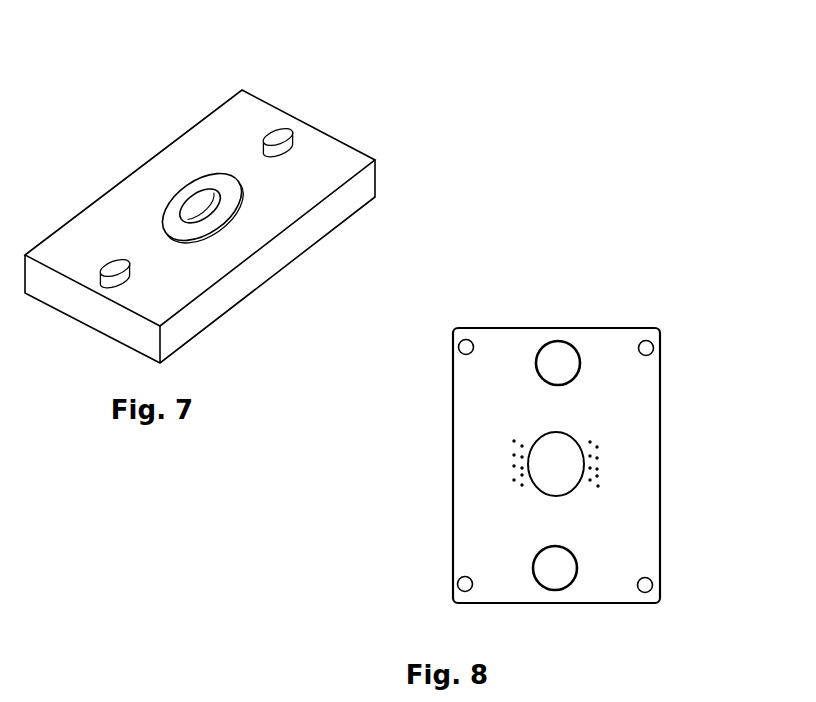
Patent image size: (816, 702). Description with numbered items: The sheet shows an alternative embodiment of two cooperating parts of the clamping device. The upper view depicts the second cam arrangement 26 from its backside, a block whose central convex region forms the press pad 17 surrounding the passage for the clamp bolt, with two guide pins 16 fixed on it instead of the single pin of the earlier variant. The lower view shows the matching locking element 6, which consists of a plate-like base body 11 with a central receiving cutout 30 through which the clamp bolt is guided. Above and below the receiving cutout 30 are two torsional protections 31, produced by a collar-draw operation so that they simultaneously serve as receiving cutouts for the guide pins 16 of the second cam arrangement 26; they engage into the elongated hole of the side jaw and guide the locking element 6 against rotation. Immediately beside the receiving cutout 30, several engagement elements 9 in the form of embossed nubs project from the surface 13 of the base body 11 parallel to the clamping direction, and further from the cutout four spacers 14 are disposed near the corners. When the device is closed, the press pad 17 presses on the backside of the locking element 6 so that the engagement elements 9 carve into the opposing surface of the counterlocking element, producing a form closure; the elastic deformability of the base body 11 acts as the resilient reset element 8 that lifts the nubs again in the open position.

In FIG. 8, the locking element 6 is at (540, 308).
In FIG. 8, the resilient reset element 8 is at (442, 418).
In FIG. 8, the engagement elements 9 is at (517, 447).
In FIG. 8, the plate-like base body 11 is at (635, 397).
In FIG. 8, the surface 13 is at (628, 528).
In FIG. 8, the spacers 14 is at (467, 343).
In FIG. 7, the guide pin 16 is at (115, 265).
In FIG. 7, the press pad 17 is at (222, 185).
In FIG. 7, the second cam arrangement 26 is at (350, 160).
In FIG. 8, the receiving cutout 30 is at (556, 460).
In FIG. 8, the torsional protection 31 is at (567, 355).